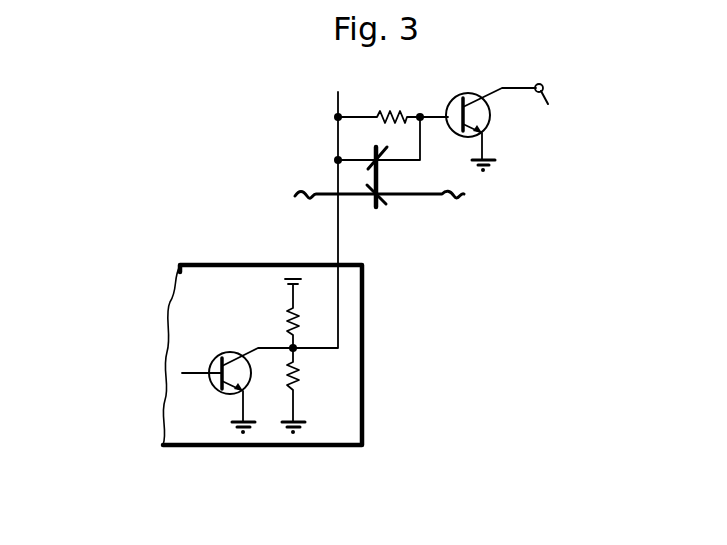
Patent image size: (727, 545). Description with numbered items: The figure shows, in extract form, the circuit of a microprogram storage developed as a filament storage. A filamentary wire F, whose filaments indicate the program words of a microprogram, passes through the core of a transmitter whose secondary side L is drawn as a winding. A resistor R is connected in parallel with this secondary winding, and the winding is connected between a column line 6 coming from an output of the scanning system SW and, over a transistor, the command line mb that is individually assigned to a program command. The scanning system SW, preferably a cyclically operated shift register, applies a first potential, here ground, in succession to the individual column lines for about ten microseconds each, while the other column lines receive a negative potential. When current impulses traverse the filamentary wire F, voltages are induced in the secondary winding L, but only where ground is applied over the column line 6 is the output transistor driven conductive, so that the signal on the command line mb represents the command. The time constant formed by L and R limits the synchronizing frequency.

The column line 6 is at (320, 222).
The resistor R is at (393, 123).
The secondary side of the transmitter L is at (373, 172).
The filamentary wire F is at (453, 223).
The command line mb is at (543, 119).
The scanning system SW is at (117, 289).